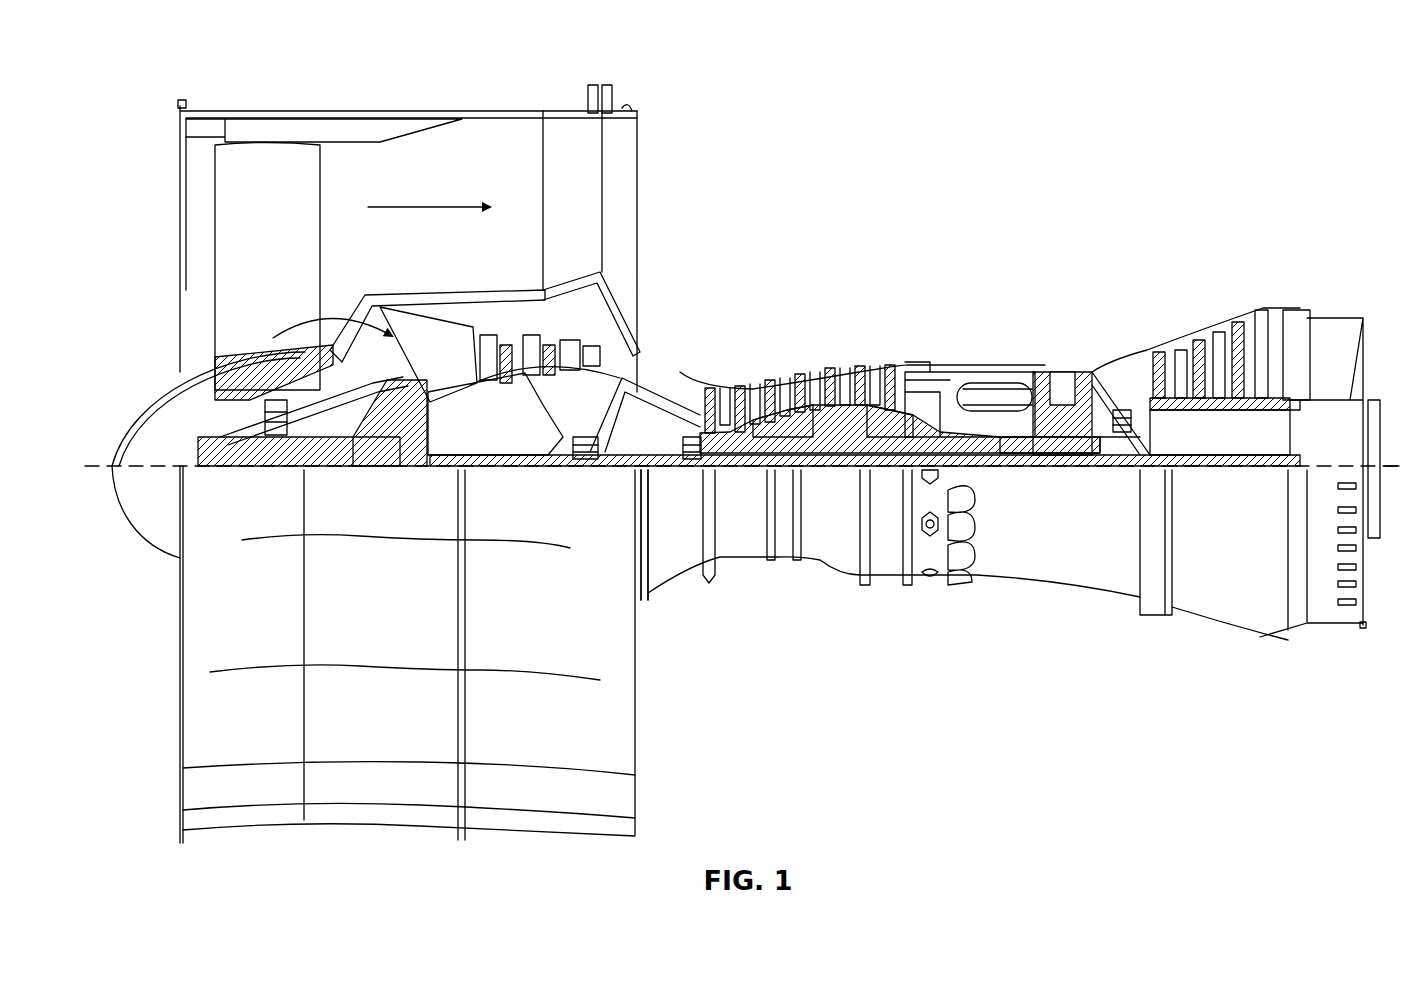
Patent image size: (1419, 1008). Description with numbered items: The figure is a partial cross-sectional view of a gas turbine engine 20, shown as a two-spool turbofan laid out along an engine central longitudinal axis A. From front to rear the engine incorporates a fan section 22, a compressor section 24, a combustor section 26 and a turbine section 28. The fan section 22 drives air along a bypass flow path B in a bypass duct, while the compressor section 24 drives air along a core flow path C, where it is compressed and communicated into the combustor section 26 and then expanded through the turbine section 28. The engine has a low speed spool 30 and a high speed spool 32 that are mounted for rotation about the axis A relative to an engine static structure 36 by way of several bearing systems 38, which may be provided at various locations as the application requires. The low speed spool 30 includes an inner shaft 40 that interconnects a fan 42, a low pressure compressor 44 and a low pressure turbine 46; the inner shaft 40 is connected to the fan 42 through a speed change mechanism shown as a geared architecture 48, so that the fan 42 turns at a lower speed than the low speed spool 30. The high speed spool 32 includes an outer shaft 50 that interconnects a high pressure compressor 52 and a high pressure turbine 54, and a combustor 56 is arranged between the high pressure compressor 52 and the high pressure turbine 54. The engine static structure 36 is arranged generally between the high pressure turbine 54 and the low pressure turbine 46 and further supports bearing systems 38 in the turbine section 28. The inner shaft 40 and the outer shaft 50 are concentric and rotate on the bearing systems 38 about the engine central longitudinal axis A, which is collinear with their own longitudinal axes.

The gas turbine engine 20 is at (1252, 80).
The fan section 22 is at (288, 100).
The compressor section 24 is at (818, 296).
The combustor section 26 is at (974, 312).
The turbine section 28 is at (1122, 294).
The low speed spool 30 is at (848, 472).
The high speed spool 32 is at (880, 405).
The engine static structure 36 is at (885, 582).
The bearing systems 38 is at (277, 430).
The inner shaft 40 is at (655, 470).
The fan 42 is at (267, 267).
The low pressure compressor 44 is at (552, 343).
The low pressure turbine 46 is at (1222, 330).
The geared architecture 48 is at (410, 440).
The outer shaft 50 is at (1025, 447).
The high pressure compressor 52 is at (813, 437).
The high pressure turbine 54 is at (1063, 371).
The combustor 56 is at (982, 393).
The engine central longitudinal axis A is at (1394, 460).
The bypass flow path B is at (432, 207).
The core flow path C is at (290, 322).